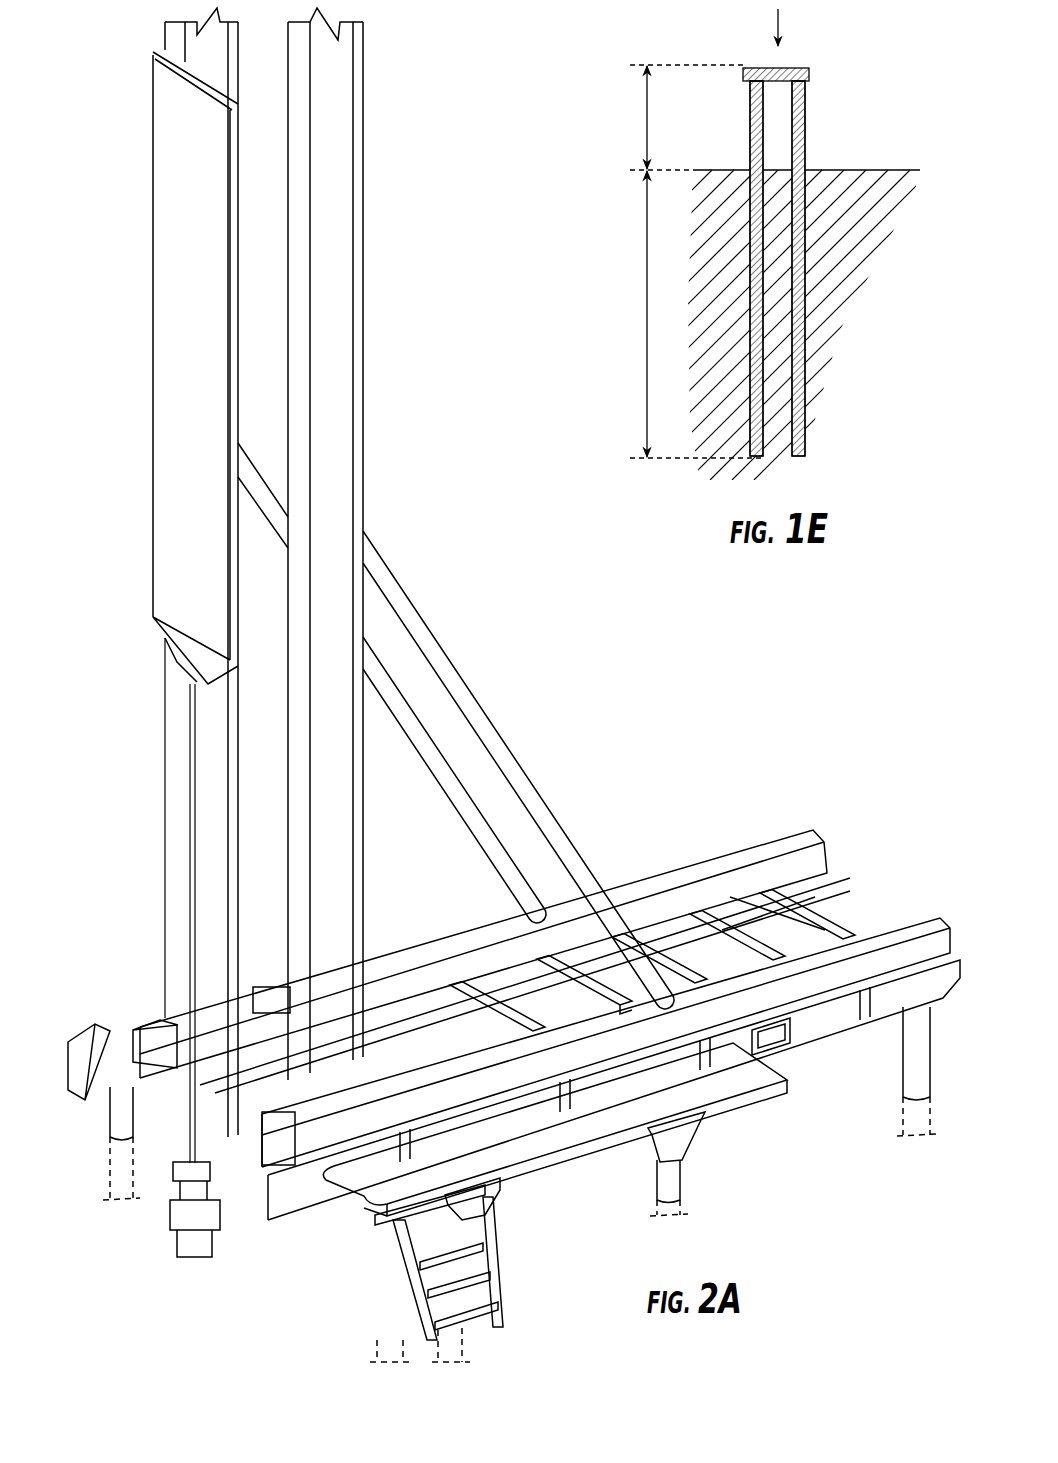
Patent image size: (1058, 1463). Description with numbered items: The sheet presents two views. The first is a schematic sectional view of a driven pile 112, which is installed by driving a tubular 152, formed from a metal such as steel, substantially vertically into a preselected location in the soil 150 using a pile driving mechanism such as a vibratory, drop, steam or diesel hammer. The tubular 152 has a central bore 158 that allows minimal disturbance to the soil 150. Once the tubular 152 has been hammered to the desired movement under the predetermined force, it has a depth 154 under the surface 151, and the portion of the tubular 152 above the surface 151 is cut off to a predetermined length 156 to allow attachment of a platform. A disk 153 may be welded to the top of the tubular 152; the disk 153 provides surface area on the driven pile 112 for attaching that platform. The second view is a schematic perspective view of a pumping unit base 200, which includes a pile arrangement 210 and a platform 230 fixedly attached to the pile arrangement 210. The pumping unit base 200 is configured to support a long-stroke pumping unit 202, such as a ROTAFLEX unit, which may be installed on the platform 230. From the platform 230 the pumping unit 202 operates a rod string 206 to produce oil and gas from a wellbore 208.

In FIG. 1E, the driven pile 112 is at (793, 232).
In FIG. 1E, the soil 150 is at (845, 228).
In FIG. 1E, the surface 151 is at (872, 169).
In FIG. 1E, the tubular 152 is at (806, 132).
In FIG. 1E, the disk 153 is at (765, 67).
In FIG. 1E, the depth 154 is at (645, 312).
In FIG. 1E, the predetermined length 156 is at (641, 125).
In FIG. 1E, the central bore 158 is at (776, 306).
In FIG. 2A, the pumping unit base 200 is at (76, 1010).
In FIG. 2A, the pumping unit 202 is at (110, 297).
In FIG. 2A, the rod string 206 is at (177, 1110).
In FIG. 2A, the wellbore 208 is at (173, 1240).
In FIG. 2A, the pile arrangement 210 is at (511, 1070).
In FIG. 2A, the platform 230 is at (752, 830).